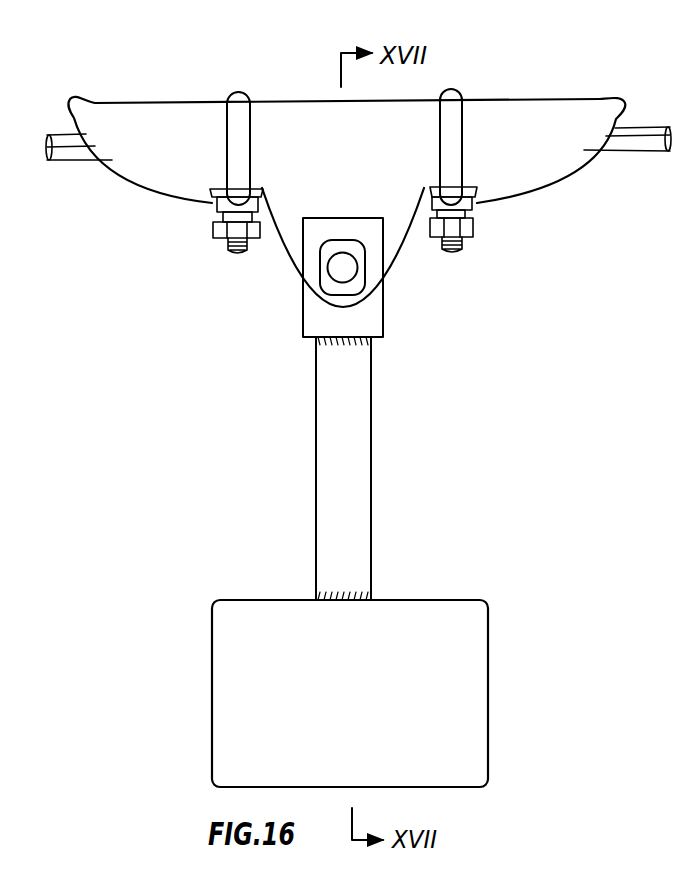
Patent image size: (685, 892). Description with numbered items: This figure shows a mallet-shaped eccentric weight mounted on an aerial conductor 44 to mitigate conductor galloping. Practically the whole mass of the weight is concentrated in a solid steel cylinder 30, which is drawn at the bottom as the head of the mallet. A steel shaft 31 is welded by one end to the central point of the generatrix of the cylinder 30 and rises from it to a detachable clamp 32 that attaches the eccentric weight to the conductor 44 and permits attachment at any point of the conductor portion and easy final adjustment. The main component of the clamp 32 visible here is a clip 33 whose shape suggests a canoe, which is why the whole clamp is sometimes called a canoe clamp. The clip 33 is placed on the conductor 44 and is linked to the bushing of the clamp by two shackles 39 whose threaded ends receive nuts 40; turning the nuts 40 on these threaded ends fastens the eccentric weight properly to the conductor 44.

The solid steel cylinder 30 is at (430, 612).
The steel shaft 31 is at (371, 399).
The clamp 32 is at (465, 75).
The clip 33 is at (527, 102).
The shackles 39 is at (237, 161).
The nuts 40 is at (221, 240).
The conductor 44 is at (637, 130).